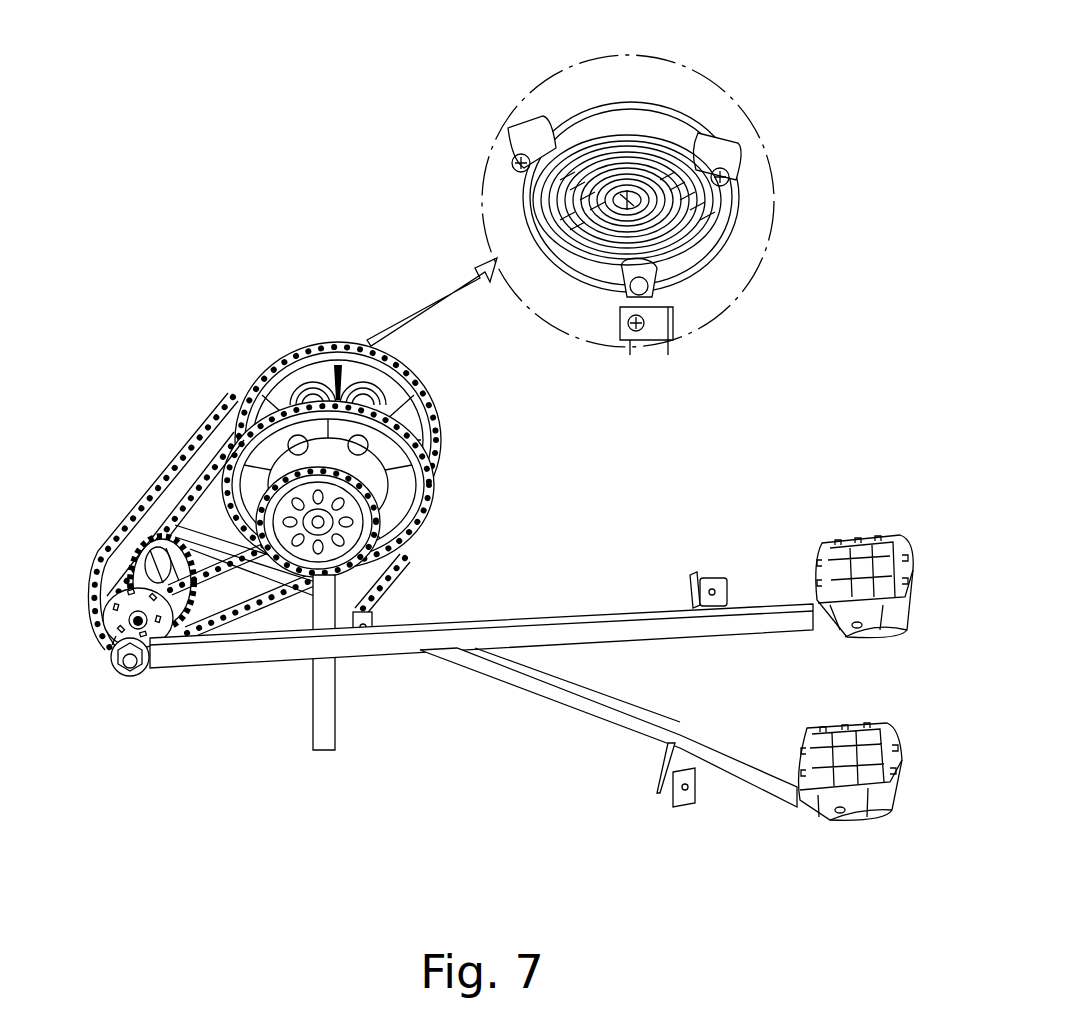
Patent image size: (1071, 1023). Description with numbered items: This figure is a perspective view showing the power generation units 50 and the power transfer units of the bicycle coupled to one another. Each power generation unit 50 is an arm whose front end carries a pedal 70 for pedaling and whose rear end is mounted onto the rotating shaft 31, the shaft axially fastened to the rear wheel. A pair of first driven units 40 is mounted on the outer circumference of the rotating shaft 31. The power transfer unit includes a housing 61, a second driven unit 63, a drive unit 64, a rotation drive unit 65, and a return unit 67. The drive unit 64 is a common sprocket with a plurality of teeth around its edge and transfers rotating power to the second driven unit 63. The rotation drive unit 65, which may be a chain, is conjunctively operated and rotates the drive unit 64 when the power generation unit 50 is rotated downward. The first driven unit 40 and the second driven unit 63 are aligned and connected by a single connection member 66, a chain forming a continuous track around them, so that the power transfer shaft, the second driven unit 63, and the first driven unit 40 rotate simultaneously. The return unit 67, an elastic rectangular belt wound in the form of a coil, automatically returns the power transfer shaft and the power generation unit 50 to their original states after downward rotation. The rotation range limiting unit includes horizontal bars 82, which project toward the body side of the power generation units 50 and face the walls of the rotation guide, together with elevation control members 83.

The rotating shaft 31 is at (130, 553).
The first driven unit 40 is at (180, 597).
The power generation unit 50 is at (560, 615).
The housing 61 is at (300, 350).
The second driven unit 63 is at (233, 393).
The drive unit 64 is at (400, 528).
The rotation drive unit 65 is at (380, 600).
The connection member 66 is at (190, 483).
The return unit 67 is at (577, 140).
The pedal 70 is at (868, 530).
The horizontal bar 82 is at (690, 580).
The elevation control member 83 is at (720, 565).